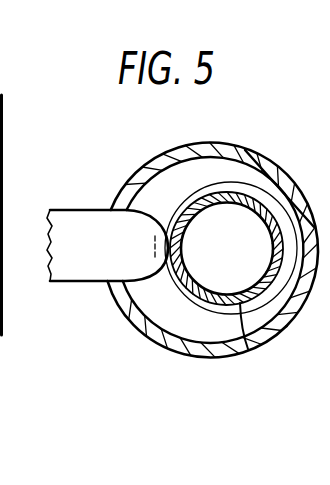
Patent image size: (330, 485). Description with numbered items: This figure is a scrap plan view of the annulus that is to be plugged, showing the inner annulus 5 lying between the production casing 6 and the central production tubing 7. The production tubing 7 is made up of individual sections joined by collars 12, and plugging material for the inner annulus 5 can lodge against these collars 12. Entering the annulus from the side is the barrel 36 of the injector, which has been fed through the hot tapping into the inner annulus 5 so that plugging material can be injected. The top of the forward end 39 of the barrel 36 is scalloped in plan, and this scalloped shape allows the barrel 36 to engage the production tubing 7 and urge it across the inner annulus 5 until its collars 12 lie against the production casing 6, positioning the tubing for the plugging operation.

The inner annulus 5 is at (163, 177).
The production casing 6 is at (165, 340).
The production tubing 7 is at (245, 351).
The collars 12 is at (212, 311).
The barrel 36 is at (82, 263).
The forward end 39 is at (191, 321).